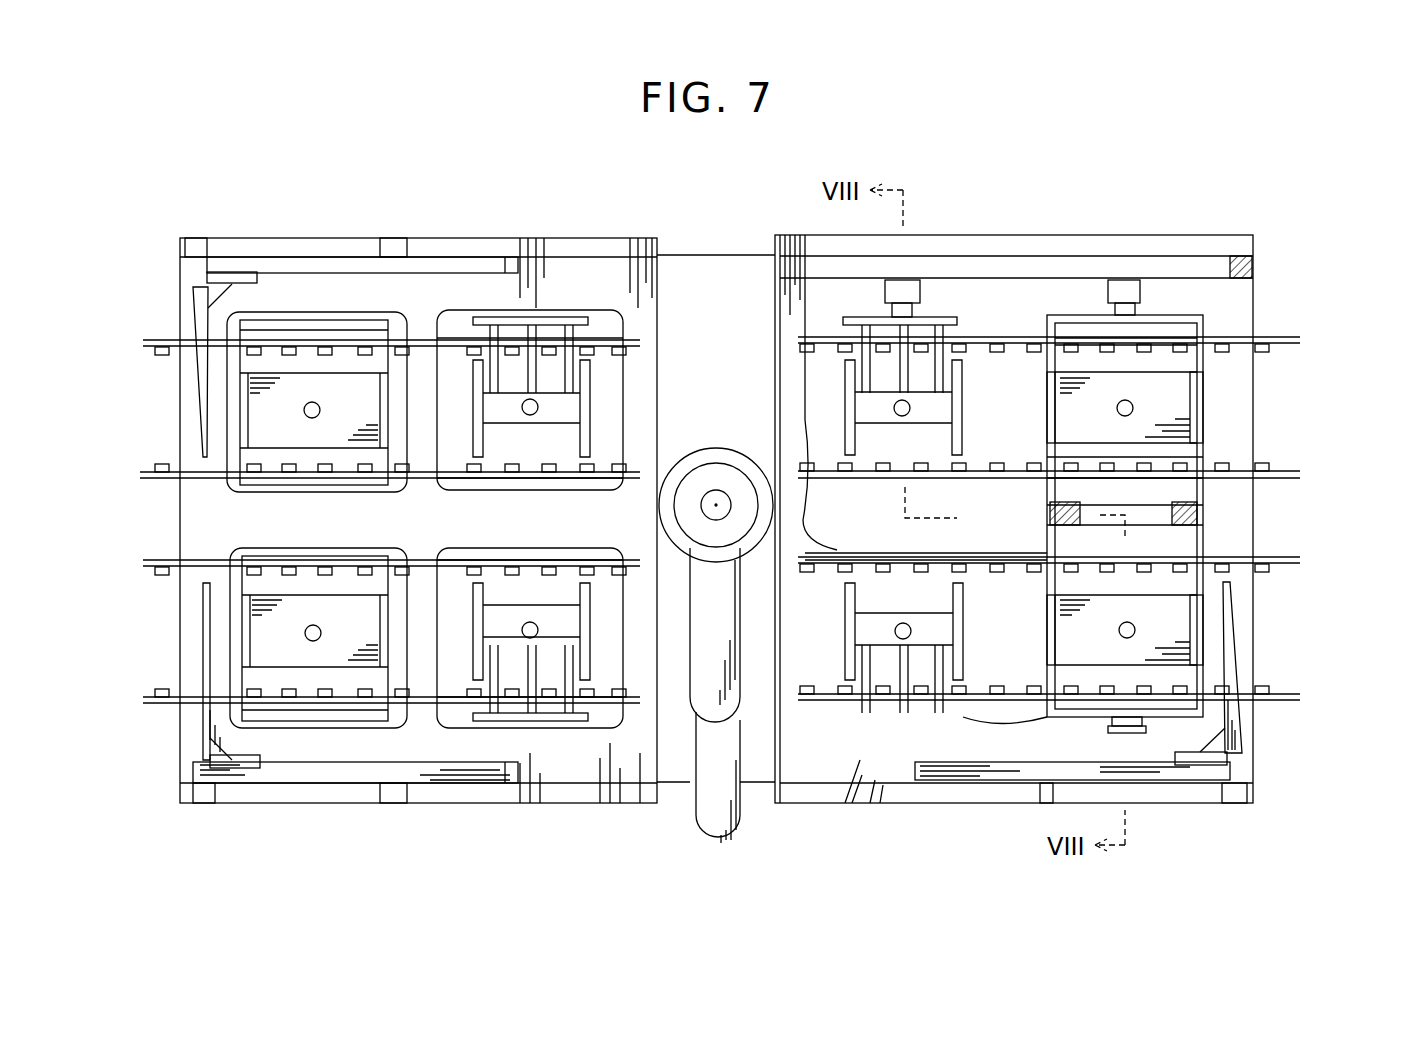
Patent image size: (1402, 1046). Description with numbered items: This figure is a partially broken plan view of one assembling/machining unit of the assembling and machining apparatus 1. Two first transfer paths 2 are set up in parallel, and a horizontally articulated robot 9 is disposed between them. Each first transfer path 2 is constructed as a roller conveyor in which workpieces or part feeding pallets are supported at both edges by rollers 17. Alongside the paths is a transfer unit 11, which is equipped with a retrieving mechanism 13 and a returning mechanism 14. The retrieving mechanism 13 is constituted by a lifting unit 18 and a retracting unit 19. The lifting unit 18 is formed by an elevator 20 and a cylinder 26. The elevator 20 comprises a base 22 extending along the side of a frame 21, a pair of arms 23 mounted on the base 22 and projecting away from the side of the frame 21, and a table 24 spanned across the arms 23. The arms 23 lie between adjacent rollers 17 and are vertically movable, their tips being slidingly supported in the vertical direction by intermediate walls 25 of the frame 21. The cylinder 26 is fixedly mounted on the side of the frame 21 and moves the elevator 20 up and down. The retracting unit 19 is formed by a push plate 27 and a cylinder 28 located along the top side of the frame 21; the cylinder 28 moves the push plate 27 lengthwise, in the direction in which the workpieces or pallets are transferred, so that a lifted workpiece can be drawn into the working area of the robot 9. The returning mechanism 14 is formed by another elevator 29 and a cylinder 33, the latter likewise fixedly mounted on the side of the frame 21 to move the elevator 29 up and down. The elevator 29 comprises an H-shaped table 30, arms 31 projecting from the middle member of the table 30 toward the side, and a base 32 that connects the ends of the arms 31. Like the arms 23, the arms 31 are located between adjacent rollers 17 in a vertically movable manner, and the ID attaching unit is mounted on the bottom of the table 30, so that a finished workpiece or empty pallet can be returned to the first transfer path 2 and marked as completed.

The assembling and machining apparatus 1 is at (1280, 165).
The first transfer path 2 is at (1262, 340).
The horizontally articulated robot 9 is at (712, 440).
The transfer unit 11 is at (290, 318).
The retrieving mechanism 13 is at (220, 167).
The returning mechanism 14 is at (548, 303).
The rollers 17 is at (585, 356).
The lifting unit 18 is at (254, 300).
The retracting unit 19 is at (176, 298).
The elevator 20 is at (1207, 395).
The frame 21 is at (1238, 256).
The base 22 is at (1150, 322).
The arms 23 is at (1050, 450).
The table 24 is at (1095, 382).
The intermediate walls 25 is at (1048, 512).
The cylinder 26 is at (1120, 280).
The push plate 27 is at (200, 382).
The cylinder 28 is at (312, 257).
The elevator 29 is at (855, 410).
The H-shaped table 30 is at (878, 415).
The arms 31 is at (860, 322).
The base 32 is at (925, 318).
The cylinder 33 is at (918, 282).